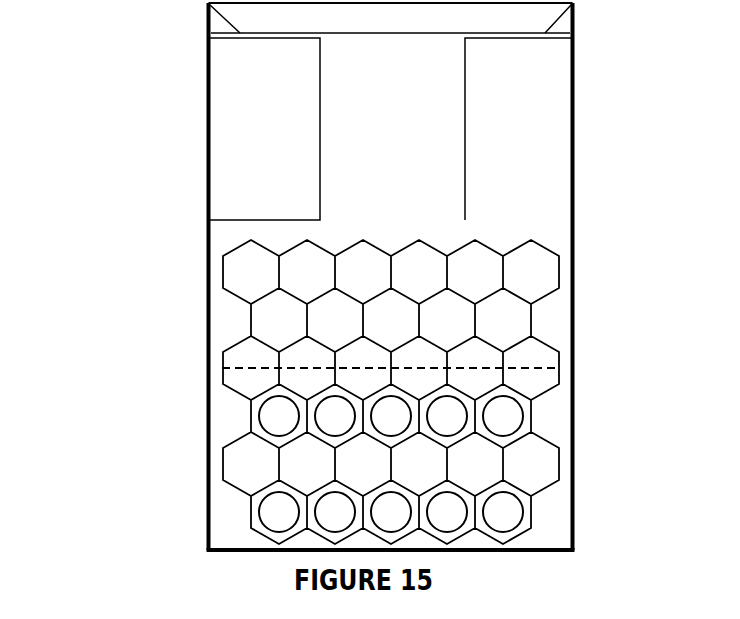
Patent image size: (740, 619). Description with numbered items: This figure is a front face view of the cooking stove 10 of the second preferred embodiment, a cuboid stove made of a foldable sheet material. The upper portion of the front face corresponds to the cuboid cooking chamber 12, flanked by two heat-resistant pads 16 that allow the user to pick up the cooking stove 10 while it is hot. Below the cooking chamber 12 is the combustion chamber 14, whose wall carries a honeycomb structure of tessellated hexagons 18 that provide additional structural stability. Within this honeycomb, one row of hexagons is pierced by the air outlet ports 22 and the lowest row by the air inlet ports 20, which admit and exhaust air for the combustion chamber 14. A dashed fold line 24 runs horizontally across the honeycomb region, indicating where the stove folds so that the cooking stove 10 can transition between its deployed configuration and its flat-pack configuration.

The cooking stove 10 is at (126, 90).
The cooking chamber 12 is at (566, 232).
The combustion chamber 14 is at (560, 428).
The heat-resistant pads 16 is at (239, 160).
The tessellated hexagons 18 is at (250, 326).
The air inlet ports 20 is at (248, 511).
The air outlet ports 22 is at (245, 411).
The fold lines 24 is at (535, 368).